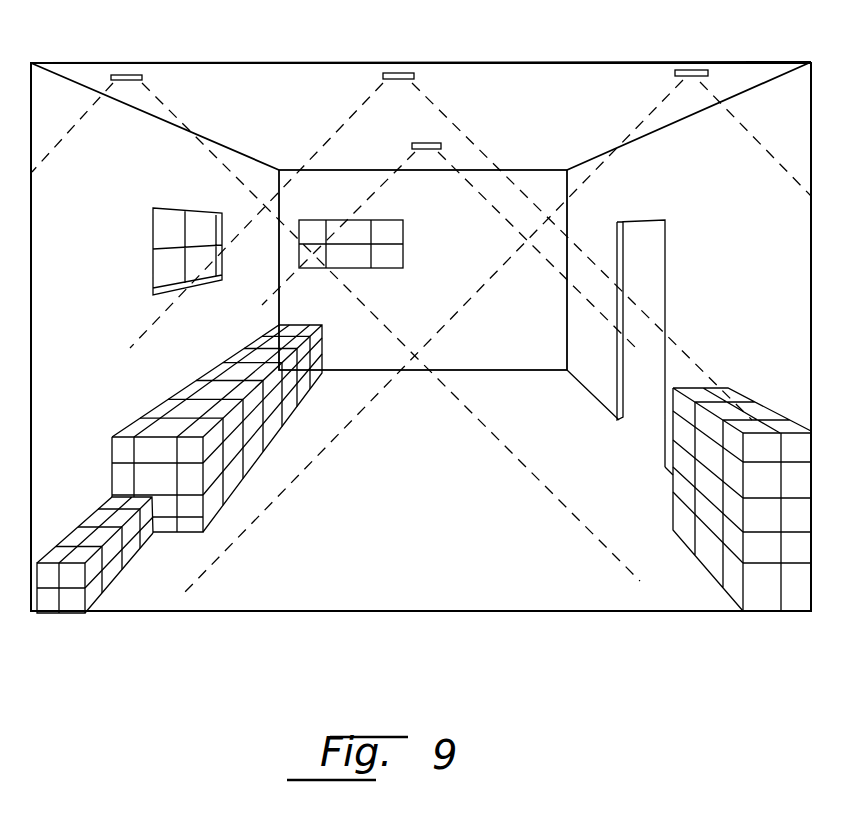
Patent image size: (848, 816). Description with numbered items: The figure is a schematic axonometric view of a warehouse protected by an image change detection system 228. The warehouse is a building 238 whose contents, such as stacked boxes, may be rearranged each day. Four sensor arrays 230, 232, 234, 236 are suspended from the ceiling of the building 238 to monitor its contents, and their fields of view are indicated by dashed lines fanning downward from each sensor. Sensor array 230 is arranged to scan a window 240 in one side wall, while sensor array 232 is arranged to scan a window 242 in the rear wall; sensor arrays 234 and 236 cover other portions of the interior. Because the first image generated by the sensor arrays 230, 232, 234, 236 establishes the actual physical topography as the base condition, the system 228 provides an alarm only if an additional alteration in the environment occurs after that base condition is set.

The image change detection system 228 is at (376, 51).
The sensor array 230 is at (143, 78).
The sensor array 232 is at (415, 77).
The sensor array 234 is at (674, 73).
The sensor array 236 is at (421, 142).
The building 238 is at (86, 63).
The window 240 is at (166, 207).
The window 242 is at (386, 220).